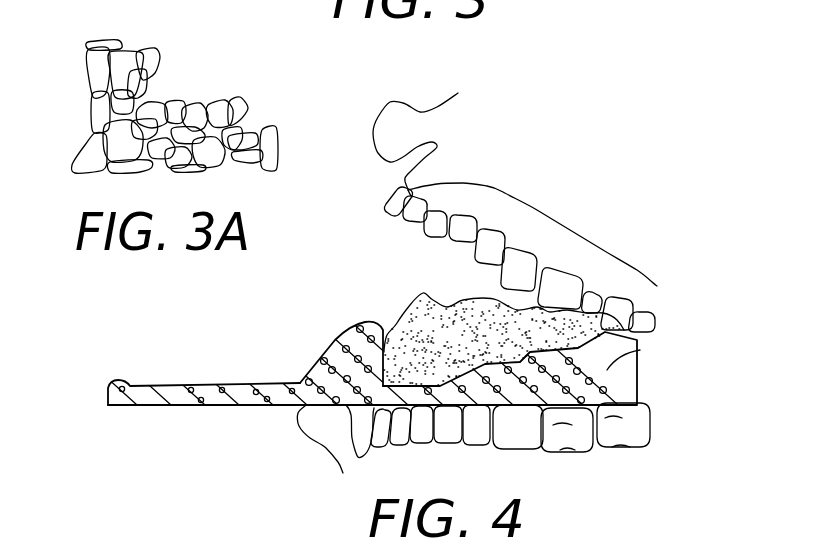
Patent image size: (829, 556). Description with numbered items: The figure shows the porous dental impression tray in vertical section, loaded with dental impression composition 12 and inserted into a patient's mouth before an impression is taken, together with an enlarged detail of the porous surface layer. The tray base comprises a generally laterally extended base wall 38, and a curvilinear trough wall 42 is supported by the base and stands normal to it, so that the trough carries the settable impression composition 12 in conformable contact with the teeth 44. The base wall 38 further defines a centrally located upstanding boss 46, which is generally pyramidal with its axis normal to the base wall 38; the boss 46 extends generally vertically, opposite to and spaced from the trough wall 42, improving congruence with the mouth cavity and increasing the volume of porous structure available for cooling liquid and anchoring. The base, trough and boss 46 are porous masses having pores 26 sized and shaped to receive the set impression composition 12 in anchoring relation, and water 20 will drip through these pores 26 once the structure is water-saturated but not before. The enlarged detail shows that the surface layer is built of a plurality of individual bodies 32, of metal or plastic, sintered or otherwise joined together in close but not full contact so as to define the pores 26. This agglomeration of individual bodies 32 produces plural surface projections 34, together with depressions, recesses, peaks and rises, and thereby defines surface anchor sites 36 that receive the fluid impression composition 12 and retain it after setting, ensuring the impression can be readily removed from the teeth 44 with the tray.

In FIG. 4, the dental impression composition 12 is at (485, 327).
In FIG. 4, the water 20 is at (638, 355).
In FIG. 3A, the pores 26 is at (118, 44).
In FIG. 4, the pores 26 is at (422, 300).
In FIG. 3A, the individual bodies 32 is at (273, 147).
In FIG. 3A, the surface projections 34 is at (97, 70).
In FIG. 3A, the surface anchor sites 36 is at (187, 117).
In FIG. 4, the base wall 38 is at (480, 405).
In FIG. 4, the trough wall 42 is at (333, 347).
In FIG. 4, the teeth 44 is at (610, 433).
In FIG. 4, the boss 46 is at (557, 357).